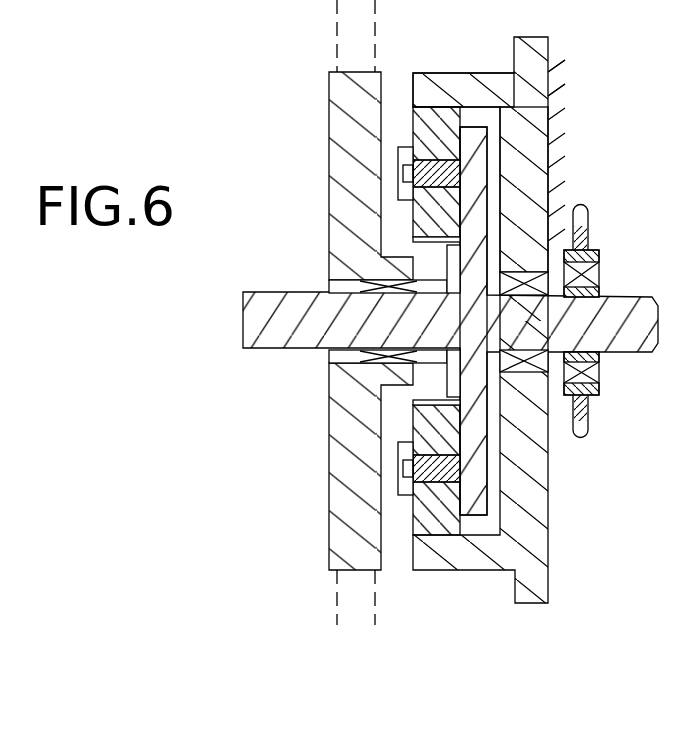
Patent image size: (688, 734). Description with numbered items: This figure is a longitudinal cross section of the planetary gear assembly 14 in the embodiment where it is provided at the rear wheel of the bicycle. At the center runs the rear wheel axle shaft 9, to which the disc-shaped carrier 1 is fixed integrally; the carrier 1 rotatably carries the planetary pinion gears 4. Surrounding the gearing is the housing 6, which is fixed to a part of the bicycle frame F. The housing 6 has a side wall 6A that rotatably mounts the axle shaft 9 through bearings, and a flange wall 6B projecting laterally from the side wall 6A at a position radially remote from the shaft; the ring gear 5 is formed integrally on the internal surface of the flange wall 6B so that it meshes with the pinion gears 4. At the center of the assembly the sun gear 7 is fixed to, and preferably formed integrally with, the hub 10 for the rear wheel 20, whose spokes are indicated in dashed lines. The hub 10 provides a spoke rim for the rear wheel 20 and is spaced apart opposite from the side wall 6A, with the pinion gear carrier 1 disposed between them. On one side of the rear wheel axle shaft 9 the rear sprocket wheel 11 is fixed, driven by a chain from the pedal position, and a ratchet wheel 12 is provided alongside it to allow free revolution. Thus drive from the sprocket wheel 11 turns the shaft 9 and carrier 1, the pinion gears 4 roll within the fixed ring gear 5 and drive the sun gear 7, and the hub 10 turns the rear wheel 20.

The carrier 1 is at (470, 463).
The planetary pinion gears 4 is at (413, 118).
The ring gear 5 is at (442, 103).
The housing 6 is at (552, 108).
The side wall 6A is at (560, 207).
The flange wall 6B is at (463, 82).
The bicycle frame F is at (562, 78).
The sun gear 7 is at (428, 241).
The rear wheel axle shaft 9 is at (281, 332).
The hub 10 is at (352, 145).
The rear sprocket wheel 11 is at (590, 213).
The ratchet wheel 12 is at (601, 277).
The planetary gear assembly 14 is at (389, 586).
The rear wheel 20 is at (347, 40).